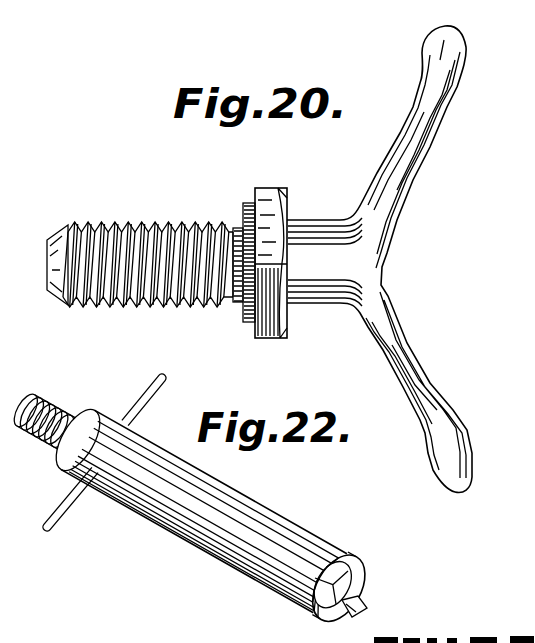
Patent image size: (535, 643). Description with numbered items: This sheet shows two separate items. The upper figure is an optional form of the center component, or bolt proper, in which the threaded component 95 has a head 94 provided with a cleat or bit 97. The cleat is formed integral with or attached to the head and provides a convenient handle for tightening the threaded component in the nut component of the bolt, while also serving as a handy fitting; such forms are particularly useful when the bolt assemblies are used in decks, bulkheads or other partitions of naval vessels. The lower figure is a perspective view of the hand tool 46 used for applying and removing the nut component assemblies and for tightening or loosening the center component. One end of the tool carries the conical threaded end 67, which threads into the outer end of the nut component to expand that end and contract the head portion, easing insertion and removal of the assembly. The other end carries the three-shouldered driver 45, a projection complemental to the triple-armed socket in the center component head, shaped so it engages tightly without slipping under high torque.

In FIG. 20, the threaded component 95 is at (148, 237).
In FIG. 20, the head 94 is at (275, 195).
In FIG. 20, the cleat or bit 97 is at (412, 147).
In FIG. 22, the conical threaded end 67 is at (62, 403).
In FIG. 22, the hand tool 46 is at (208, 512).
In FIG. 22, the three-shouldered driver 45 is at (360, 603).